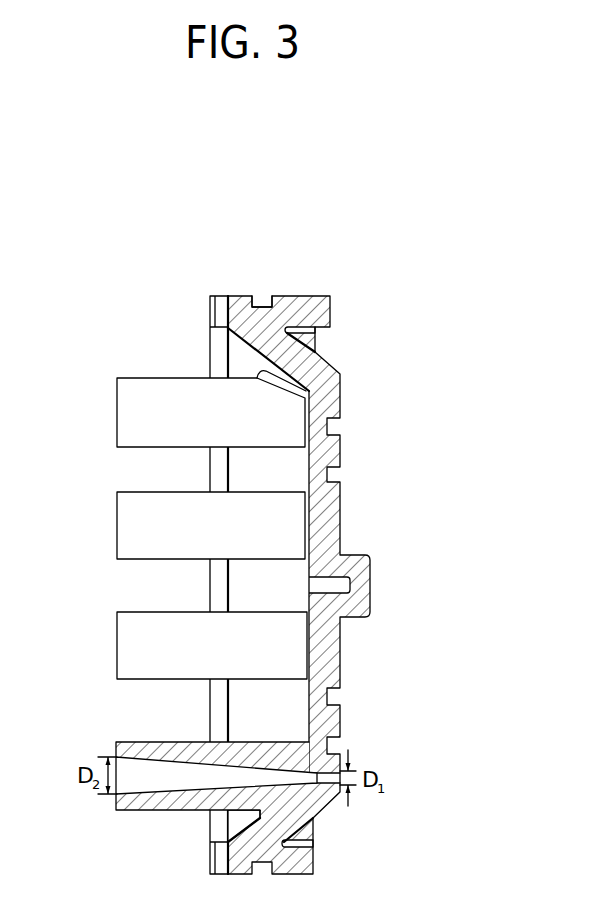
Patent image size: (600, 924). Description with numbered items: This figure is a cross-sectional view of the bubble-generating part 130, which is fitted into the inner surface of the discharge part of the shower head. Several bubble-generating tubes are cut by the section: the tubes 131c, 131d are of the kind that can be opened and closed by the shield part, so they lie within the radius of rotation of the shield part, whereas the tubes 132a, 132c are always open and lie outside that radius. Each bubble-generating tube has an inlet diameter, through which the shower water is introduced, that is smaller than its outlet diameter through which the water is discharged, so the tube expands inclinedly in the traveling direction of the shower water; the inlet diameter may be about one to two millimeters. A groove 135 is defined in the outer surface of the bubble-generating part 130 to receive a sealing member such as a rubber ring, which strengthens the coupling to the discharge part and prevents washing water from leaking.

The bubble-generating part 130 is at (375, 264).
The groove 135 is at (261, 300).
The bubble-generating tube 132a is at (143, 377).
The bubble-generating tube 131d is at (138, 492).
The bubble-generating tube 131c is at (137, 612).
The bubble-generating tube 132c is at (145, 812).